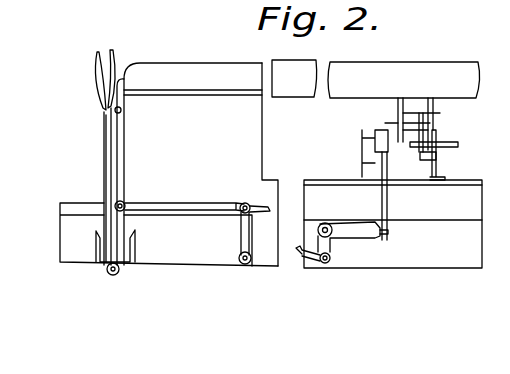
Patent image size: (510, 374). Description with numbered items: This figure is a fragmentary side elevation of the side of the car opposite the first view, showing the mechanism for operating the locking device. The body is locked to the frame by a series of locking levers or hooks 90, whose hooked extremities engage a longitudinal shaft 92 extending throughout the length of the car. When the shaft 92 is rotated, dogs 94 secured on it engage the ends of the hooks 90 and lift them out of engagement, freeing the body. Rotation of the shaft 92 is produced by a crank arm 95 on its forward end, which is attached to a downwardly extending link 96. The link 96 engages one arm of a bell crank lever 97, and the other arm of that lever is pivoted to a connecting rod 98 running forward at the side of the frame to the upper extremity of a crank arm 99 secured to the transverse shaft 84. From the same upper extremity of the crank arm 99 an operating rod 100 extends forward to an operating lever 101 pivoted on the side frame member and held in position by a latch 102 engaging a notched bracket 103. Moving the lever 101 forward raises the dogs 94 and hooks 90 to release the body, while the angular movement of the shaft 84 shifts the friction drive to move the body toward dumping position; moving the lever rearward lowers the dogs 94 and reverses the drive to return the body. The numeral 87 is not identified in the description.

The shaft 84 is at (251, 264).
The lever 87 is at (115, 4).
The locking levers or hooks 90 is at (420, 118).
The longitudinal shaft 92 is at (458, 144).
The dogs 94 is at (422, 157).
The crank arm 95 is at (375, 137).
The link 96 is at (382, 158).
The bell crank lever 97 is at (356, 232).
The connecting rod 98 is at (298, 252).
The crank arm 99 is at (241, 237).
The operating rod 100 is at (150, 203).
The operating lever 101 is at (110, 138).
The latch 102 is at (108, 163).
The notched bracket 103 is at (99, 240).